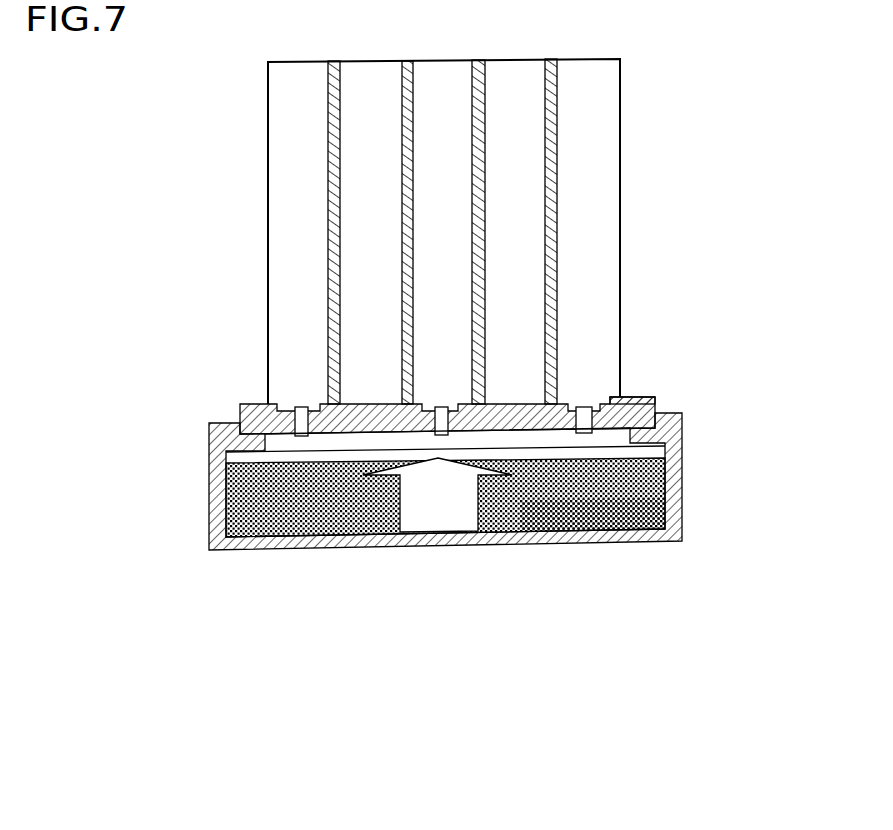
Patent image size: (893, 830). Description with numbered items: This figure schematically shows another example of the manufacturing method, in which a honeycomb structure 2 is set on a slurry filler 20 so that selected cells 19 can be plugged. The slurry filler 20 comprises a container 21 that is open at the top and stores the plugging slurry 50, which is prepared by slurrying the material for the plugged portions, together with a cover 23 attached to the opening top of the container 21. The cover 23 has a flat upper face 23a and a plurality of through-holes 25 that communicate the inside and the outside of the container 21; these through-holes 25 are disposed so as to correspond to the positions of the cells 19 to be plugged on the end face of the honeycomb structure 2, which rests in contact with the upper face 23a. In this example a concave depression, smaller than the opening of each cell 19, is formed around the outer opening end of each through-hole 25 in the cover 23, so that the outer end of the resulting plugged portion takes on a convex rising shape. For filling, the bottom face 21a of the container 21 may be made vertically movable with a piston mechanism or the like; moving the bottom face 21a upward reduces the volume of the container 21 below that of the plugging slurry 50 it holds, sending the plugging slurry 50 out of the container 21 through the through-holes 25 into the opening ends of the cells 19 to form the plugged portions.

The honeycomb structure 2 is at (620, 215).
The cells 19 is at (442, 382).
The slurry filler 20 is at (685, 480).
The container 21 is at (209, 490).
The bottom face 21a is at (620, 527).
The cover 23 is at (240, 410).
The upper face 23a is at (637, 396).
The through-holes 25 is at (302, 403).
The plugging slurry 50 is at (243, 510).